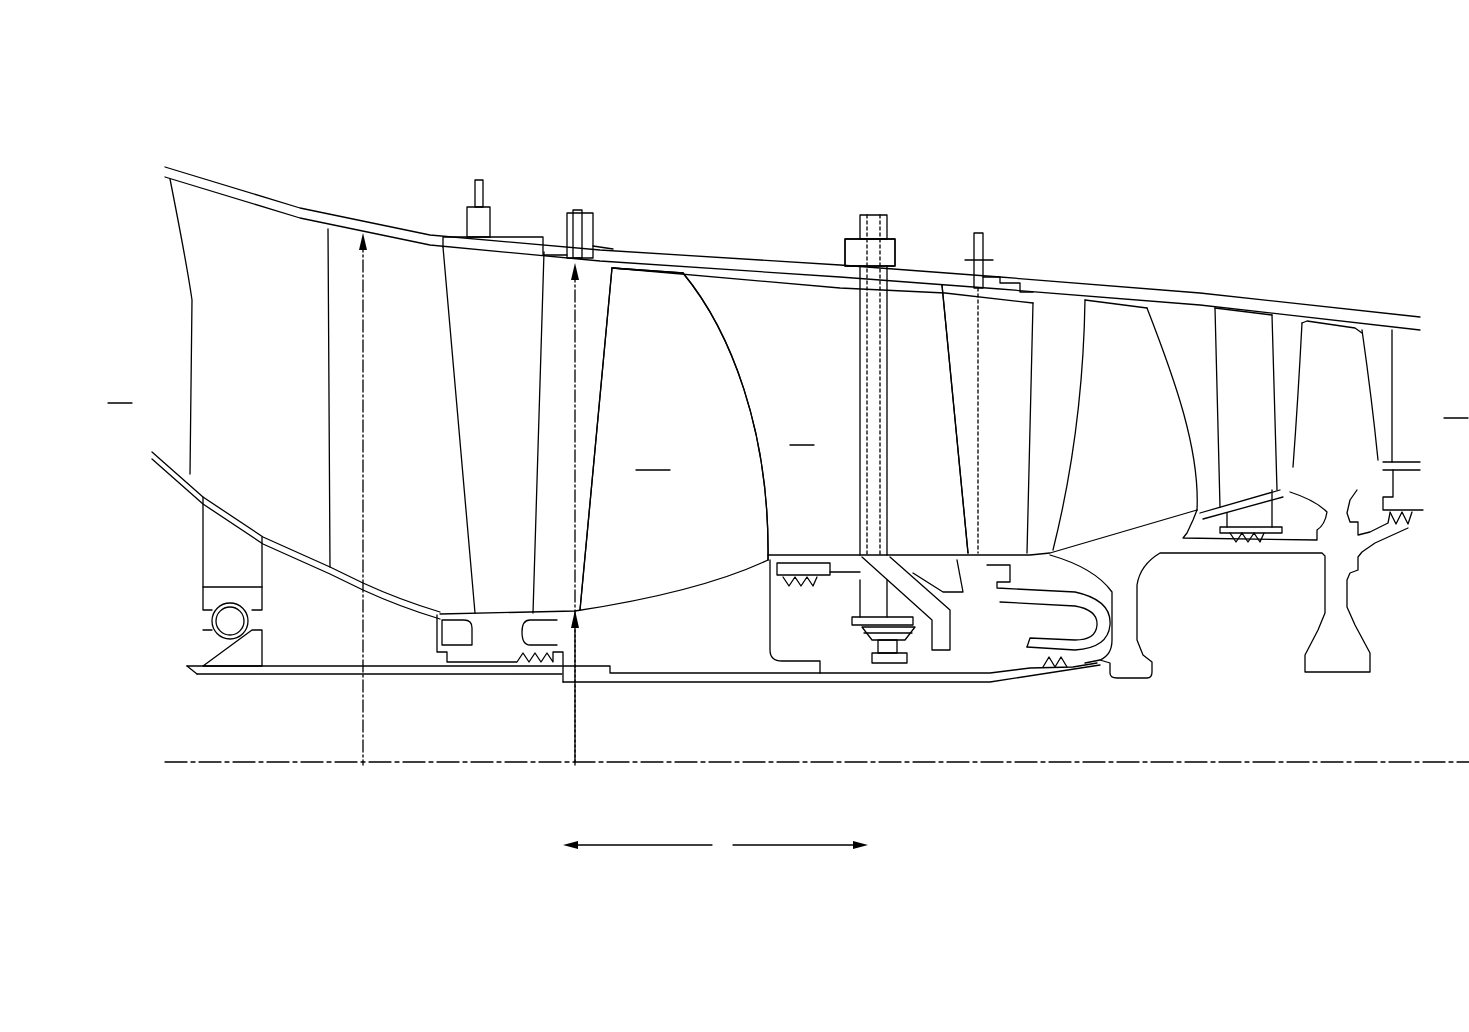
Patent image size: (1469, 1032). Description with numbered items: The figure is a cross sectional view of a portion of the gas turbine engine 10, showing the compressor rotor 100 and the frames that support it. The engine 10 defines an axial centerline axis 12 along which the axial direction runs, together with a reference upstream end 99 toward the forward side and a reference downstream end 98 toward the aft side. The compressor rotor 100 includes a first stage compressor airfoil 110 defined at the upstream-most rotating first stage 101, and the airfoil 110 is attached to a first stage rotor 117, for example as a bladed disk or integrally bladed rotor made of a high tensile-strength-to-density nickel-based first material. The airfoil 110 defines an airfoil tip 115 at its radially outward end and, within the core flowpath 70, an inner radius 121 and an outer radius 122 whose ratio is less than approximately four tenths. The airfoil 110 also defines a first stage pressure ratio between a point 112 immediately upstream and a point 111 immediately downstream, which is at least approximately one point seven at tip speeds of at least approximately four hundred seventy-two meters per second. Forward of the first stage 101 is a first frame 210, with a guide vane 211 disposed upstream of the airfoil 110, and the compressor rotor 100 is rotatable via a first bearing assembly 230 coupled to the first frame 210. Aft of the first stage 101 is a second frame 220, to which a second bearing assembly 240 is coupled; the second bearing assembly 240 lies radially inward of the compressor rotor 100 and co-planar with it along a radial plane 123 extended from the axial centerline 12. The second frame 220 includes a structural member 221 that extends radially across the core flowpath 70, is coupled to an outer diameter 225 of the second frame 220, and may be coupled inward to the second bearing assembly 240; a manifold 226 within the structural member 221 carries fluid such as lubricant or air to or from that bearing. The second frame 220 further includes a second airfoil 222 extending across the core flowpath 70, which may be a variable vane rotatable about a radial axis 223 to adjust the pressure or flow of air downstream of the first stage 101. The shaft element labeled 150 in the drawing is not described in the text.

The gas turbine engine 10 is at (1042, 90).
The axial centerline axis 12 is at (172, 765).
The core flowpath 70 is at (802, 432).
The downstream end 98 is at (1456, 405).
The upstream end 99 is at (120, 390).
The compressor rotor 100 is at (740, 294).
The first stage 101 is at (644, 296).
The first stage compressor airfoil 110 is at (674, 439).
The point immediately downstream of the first stage compressor airfoil 111 is at (790, 343).
The point immediately upstream of the first stage compressor airfoil 112 is at (593, 363).
The airfoil tip 115 is at (675, 256).
The first stage rotor 117 is at (668, 628).
The inner radius 121 is at (575, 712).
The outer radius 122 is at (575, 424).
The radial plane 123 is at (363, 735).
The shaft 150 is at (190, 668).
The first frame 210 is at (221, 170).
The guide vane 211 is at (212, 300).
The second frame 220 is at (912, 222).
The structural member 221 is at (887, 421).
The second airfoil 222 is at (1020, 443).
The radial axis 223 is at (985, 395).
The outer diameter 225 is at (932, 260).
The manifold 226 is at (863, 380).
The first bearing assembly 230 is at (188, 627).
The second bearing assembly 240 is at (850, 658).